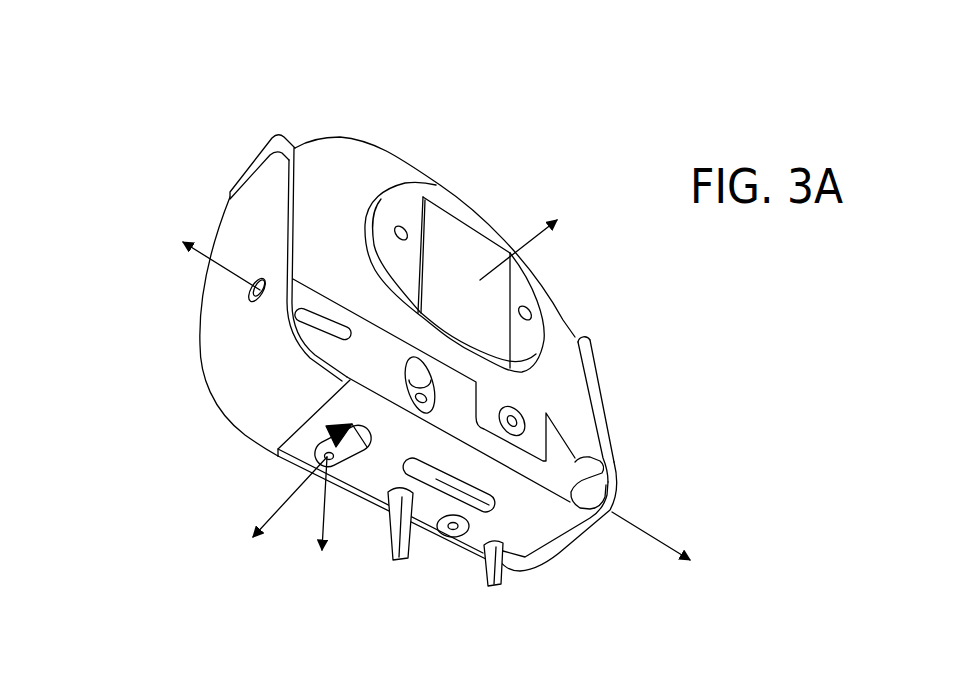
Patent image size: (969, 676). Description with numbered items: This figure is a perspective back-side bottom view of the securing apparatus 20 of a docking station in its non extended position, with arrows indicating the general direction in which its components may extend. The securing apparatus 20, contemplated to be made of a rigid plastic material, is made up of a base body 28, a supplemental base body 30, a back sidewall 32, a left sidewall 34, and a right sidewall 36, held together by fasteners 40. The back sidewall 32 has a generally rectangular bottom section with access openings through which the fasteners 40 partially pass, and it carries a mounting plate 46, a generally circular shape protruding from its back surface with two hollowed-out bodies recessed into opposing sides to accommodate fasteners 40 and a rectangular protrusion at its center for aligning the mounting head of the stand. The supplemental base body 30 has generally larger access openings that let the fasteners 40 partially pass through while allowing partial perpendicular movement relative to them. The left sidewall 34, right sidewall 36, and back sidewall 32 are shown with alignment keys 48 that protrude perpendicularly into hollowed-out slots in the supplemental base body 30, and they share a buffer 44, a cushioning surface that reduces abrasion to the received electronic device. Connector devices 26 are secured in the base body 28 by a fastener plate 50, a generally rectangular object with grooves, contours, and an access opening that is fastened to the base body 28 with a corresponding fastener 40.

The securing apparatus 20 is at (106, 98).
The connector devices 26 is at (400, 540).
The base body 28 is at (445, 477).
The supplemental base body 30 is at (531, 504).
The back sidewall 32 is at (336, 163).
The left sidewall 34 is at (592, 372).
The right sidewall 36 is at (213, 340).
The fasteners 40 is at (403, 383).
The buffer 44 is at (252, 175).
The mounting plate 46 is at (466, 250).
The alignment keys 48 is at (338, 320).
The fastener plate 50 is at (514, 527).